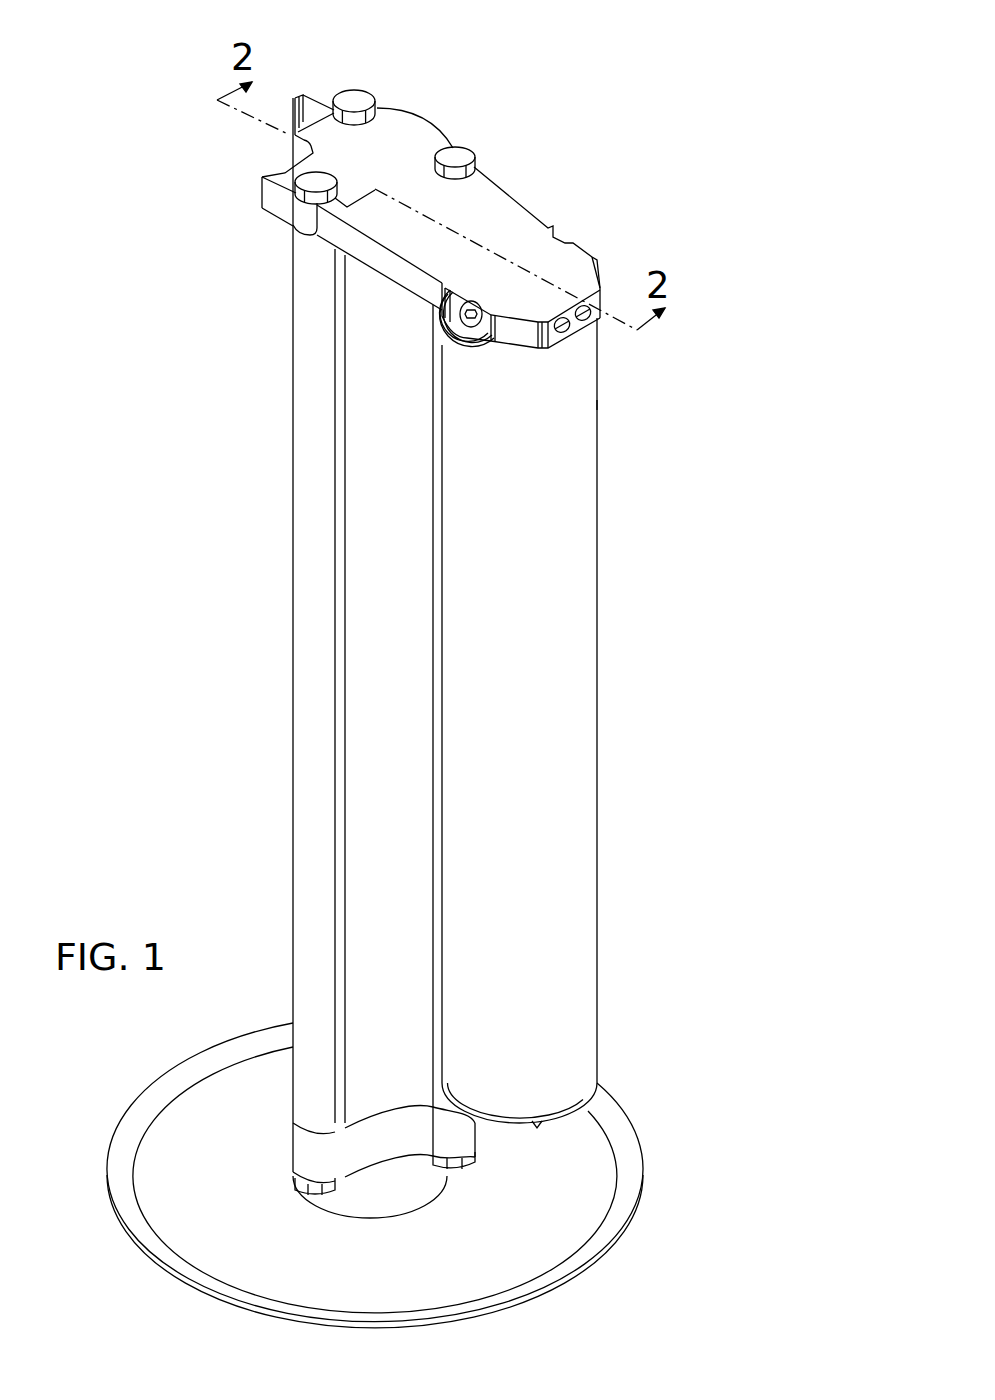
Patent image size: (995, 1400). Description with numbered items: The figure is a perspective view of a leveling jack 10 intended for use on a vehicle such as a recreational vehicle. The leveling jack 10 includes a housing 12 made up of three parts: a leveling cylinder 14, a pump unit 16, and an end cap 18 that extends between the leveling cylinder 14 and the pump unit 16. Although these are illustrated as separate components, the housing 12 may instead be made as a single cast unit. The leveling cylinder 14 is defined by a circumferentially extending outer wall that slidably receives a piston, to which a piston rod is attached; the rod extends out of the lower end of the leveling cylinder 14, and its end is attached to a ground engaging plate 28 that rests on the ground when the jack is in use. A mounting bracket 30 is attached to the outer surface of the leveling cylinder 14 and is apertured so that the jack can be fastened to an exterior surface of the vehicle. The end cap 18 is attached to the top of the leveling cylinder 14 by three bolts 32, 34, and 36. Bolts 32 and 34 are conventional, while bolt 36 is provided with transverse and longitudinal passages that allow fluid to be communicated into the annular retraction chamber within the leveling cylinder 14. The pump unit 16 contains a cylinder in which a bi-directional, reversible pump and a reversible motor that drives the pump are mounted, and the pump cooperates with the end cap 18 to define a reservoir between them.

The leveling jack 10 is at (690, 508).
The housing 12 is at (592, 260).
The leveling cylinder 14 is at (373, 713).
The pump unit 16 is at (572, 742).
The end cap 18 is at (497, 230).
The ground engaging plate 28 is at (568, 1230).
The mounting bracket 30 is at (307, 112).
The bolt 32 is at (358, 107).
The bolt 34 is at (462, 163).
The bolt 36 is at (312, 190).